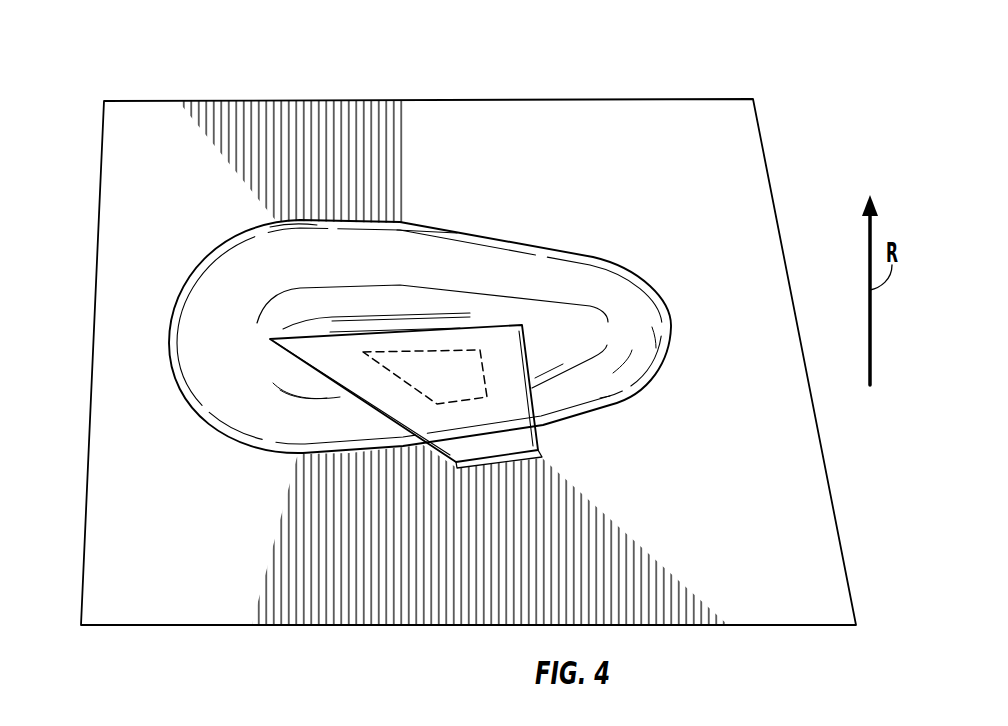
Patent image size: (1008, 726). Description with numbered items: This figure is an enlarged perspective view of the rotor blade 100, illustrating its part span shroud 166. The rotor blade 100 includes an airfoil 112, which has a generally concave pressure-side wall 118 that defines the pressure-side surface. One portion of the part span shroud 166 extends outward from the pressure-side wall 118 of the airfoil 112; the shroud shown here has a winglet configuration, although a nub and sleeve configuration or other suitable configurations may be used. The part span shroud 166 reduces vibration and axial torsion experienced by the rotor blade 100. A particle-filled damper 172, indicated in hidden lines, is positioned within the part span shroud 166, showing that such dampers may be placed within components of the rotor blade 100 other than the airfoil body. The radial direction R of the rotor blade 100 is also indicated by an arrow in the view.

The rotor blade 100 is at (67, 85).
The airfoil 112 is at (157, 490).
The pressure-side wall 118 is at (722, 519).
The part span shroud 166 is at (478, 442).
The particle-filled damper 172 is at (433, 358).